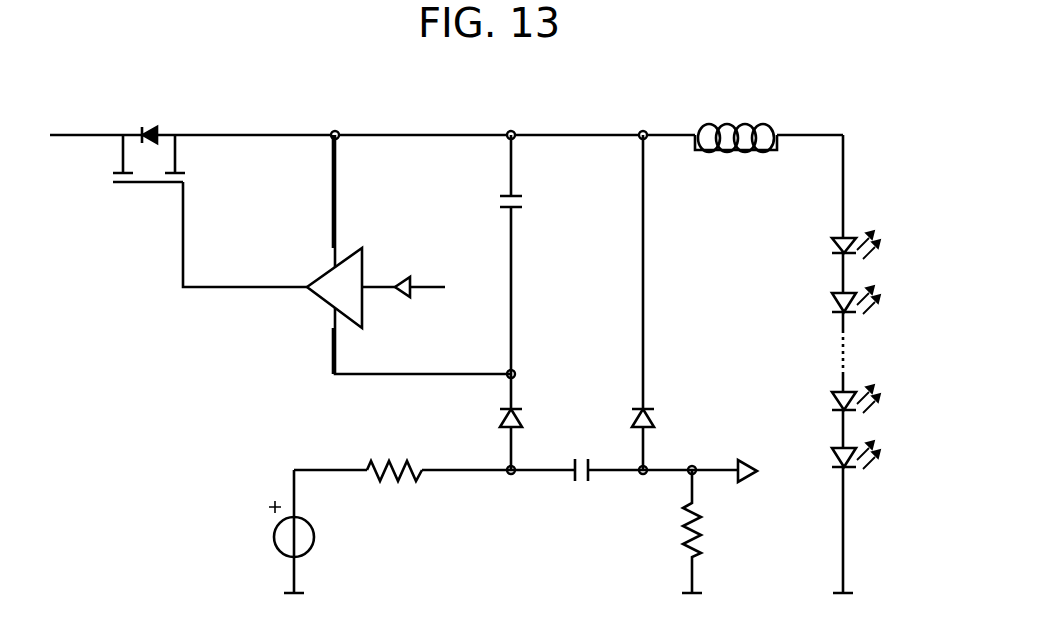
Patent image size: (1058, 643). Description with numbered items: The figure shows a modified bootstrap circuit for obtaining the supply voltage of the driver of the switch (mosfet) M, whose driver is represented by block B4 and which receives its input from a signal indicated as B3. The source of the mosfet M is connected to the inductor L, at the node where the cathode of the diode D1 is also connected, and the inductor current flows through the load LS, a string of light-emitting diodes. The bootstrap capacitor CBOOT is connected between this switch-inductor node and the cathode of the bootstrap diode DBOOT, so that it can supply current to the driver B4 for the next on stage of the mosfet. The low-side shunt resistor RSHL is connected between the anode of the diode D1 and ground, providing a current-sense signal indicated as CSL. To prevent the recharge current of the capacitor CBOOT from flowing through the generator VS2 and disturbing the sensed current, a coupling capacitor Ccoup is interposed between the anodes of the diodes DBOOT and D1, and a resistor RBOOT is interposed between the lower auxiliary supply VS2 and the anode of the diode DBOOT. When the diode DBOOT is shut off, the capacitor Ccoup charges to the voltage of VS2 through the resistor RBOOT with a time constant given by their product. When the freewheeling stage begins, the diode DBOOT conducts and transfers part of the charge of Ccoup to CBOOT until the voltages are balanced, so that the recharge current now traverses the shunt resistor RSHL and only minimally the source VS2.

The switch (mosfet) M is at (210, 187).
The driver block B4 is at (318, 292).
The driver input signal B3 is at (433, 287).
The bootstrap capacitor CBOOT is at (552, 254).
The bootstrap diode DBOOT is at (550, 422).
The diode D1 is at (663, 302).
The resistor RBOOT is at (386, 455).
The coupling capacitor Ccoup is at (572, 483).
The current sense output CSL is at (770, 473).
The low-side shunt resistor RSHL is at (721, 531).
The lower auxiliary supply VS2 is at (280, 531).
The inductor L is at (736, 122).
The load LS is at (861, 364).